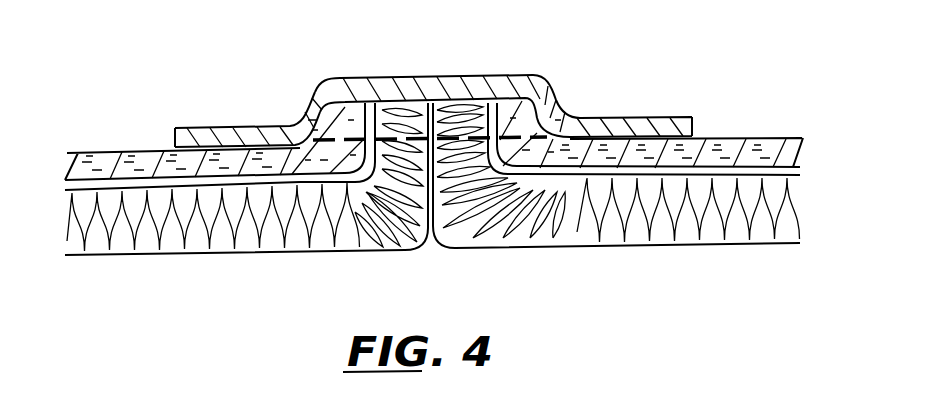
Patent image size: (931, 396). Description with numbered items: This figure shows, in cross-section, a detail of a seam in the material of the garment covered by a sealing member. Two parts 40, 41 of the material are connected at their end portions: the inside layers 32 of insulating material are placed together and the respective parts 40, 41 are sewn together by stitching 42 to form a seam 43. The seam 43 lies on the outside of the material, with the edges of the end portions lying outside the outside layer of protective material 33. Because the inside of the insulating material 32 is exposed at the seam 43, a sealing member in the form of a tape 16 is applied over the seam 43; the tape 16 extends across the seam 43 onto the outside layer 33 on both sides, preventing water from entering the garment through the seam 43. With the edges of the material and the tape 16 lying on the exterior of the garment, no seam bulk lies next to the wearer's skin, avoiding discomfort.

The tape 16 is at (348, 90).
The inside layer 32 is at (109, 224).
The outside layer of protective material 33 is at (92, 163).
The part 40 is at (285, 265).
The part 41 is at (685, 259).
The stitching 42 is at (507, 135).
The seam 43 is at (508, 58).